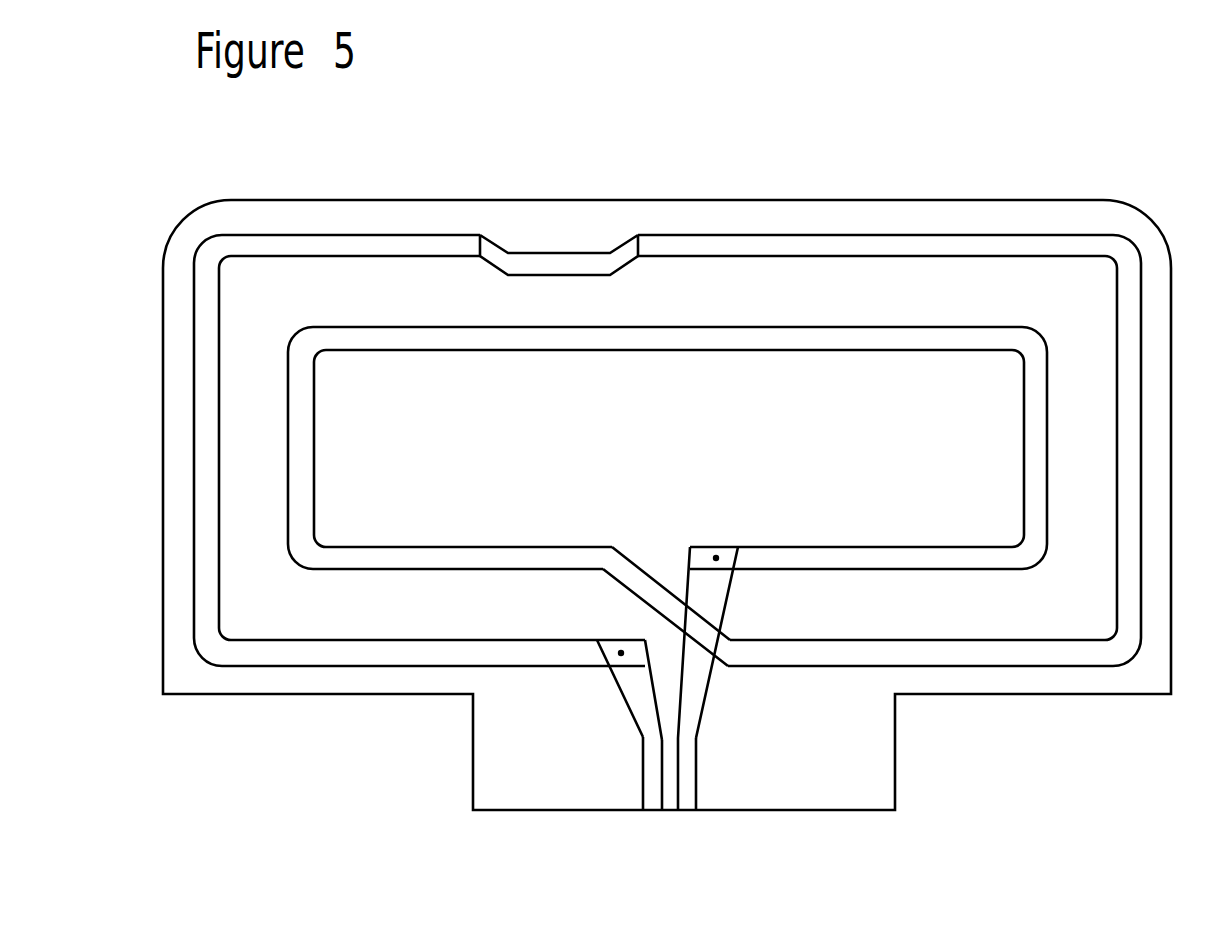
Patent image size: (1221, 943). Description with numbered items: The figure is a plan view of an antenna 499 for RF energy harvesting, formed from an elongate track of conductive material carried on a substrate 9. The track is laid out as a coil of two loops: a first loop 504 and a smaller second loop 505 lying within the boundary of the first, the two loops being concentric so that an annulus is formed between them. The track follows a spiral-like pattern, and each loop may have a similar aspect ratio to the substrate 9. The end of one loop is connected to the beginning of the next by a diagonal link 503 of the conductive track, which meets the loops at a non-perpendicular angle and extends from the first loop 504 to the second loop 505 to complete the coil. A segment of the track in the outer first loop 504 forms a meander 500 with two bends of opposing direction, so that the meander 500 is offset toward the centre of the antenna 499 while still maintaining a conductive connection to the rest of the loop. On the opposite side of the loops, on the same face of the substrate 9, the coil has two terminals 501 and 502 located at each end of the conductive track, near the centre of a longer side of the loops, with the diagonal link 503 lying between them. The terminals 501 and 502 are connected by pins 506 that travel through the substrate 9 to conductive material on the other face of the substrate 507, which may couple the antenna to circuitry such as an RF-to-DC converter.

The antenna 499 is at (392, 172).
The meander 500 is at (577, 236).
The terminal 501 is at (607, 652).
The terminal 502 is at (704, 557).
The diagonal link 503 is at (643, 593).
The first loop 504 is at (910, 655).
The second loop 505 is at (1017, 557).
The pins 506 is at (621, 653).
The conductive material on the other face of the substrate 507 is at (655, 780).
The substrate 9 is at (653, 448).